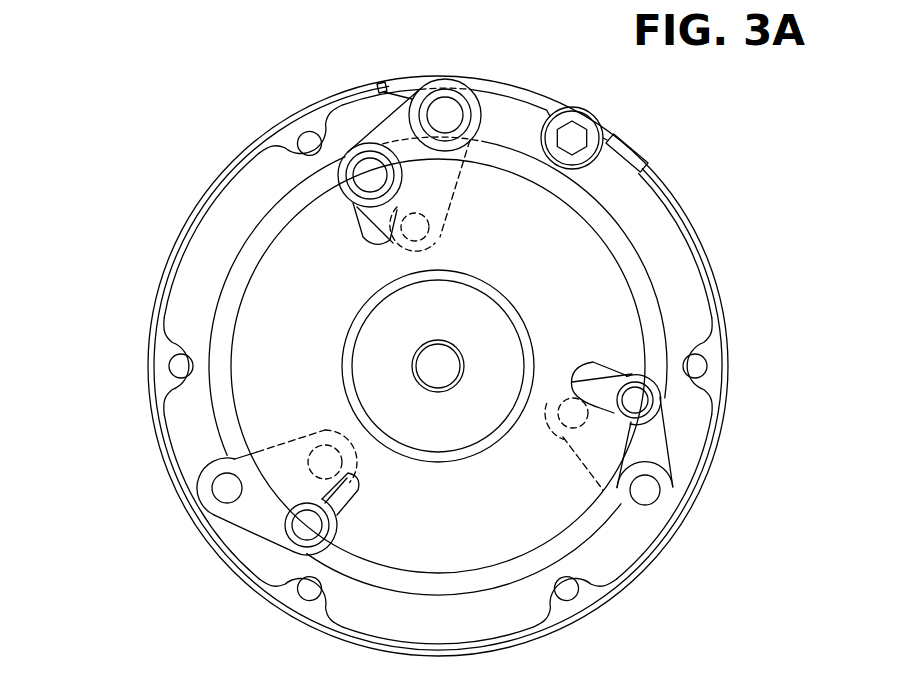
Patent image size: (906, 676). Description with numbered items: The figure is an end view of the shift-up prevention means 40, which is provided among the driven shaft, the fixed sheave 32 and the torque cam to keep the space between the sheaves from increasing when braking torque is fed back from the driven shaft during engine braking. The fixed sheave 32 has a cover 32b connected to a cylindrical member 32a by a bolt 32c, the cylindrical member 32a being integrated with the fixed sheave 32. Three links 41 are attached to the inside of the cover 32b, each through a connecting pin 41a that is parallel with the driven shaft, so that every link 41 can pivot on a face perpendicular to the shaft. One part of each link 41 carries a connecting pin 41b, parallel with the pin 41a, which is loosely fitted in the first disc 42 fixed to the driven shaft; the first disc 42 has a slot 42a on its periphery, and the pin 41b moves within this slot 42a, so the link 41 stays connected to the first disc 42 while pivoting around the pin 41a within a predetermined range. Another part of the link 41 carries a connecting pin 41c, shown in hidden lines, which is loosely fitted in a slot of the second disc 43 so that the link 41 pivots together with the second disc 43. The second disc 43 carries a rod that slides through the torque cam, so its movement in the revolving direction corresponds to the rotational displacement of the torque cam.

The shift-up prevention means 40 is at (256, 103).
The fixed sheave 32 is at (380, 366).
The cylindrical member 32a is at (160, 350).
The cover 32b is at (640, 152).
The bolt 32c is at (578, 126).
The link 41 is at (417, 158).
The connecting pin 41a is at (447, 113).
The connecting pin 41b is at (370, 175).
The connecting pin 41c is at (430, 213).
The first disc 42 is at (212, 300).
The slot 42a is at (363, 210).
The second disc 43 is at (253, 290).